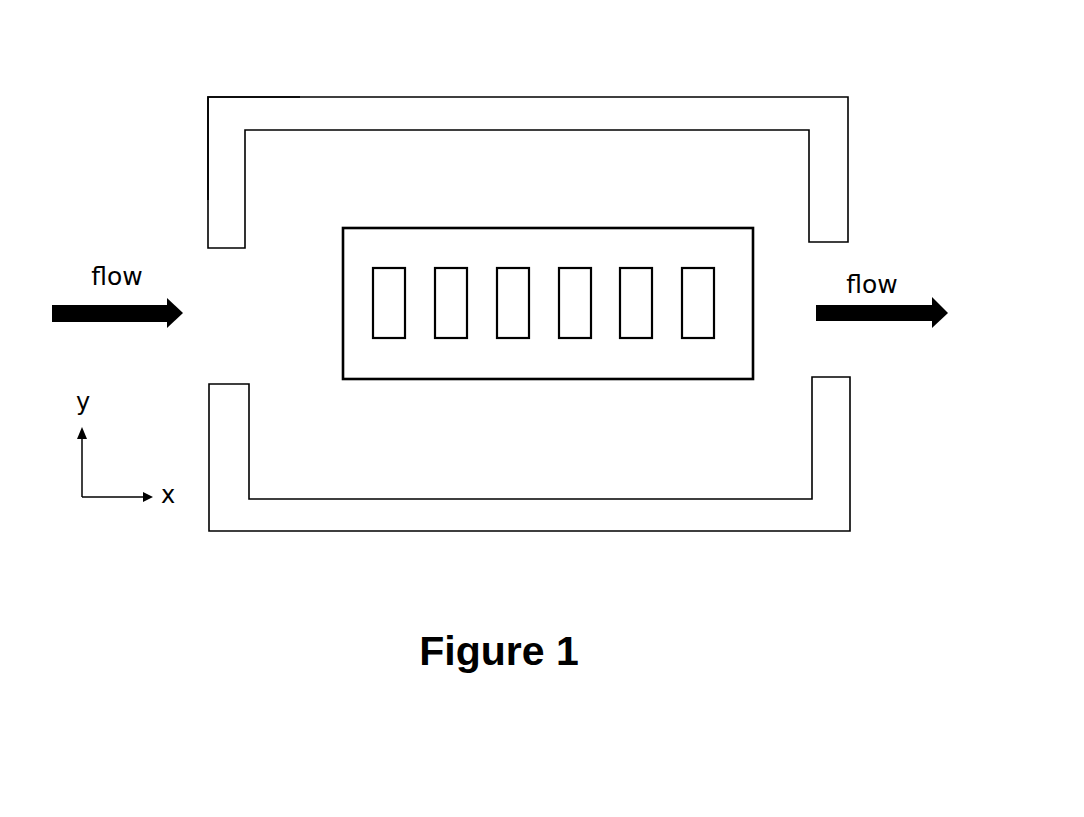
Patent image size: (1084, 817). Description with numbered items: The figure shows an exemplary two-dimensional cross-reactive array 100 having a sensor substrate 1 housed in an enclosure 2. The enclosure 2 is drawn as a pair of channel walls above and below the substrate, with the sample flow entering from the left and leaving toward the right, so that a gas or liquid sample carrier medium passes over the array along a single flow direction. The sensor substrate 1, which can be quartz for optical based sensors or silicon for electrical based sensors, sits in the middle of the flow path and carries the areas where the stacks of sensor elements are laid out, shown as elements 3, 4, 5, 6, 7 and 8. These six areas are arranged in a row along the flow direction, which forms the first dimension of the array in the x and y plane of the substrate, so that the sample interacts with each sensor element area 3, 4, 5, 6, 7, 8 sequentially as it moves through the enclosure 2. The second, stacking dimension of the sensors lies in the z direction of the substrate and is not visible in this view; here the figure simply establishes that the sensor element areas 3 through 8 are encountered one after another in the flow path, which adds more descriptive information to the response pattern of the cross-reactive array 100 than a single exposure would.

The flow measurement device 100 is at (292, 68).
The sensor substrate 1 is at (343, 343).
The enclosure 2 is at (208, 195).
The sensor element area 3 is at (391, 271).
The sensor element area 4 is at (448, 341).
The sensor element area 5 is at (522, 271).
The sensor element area 6 is at (580, 341).
The sensor element area 7 is at (638, 271).
The sensor element area 8 is at (705, 341).